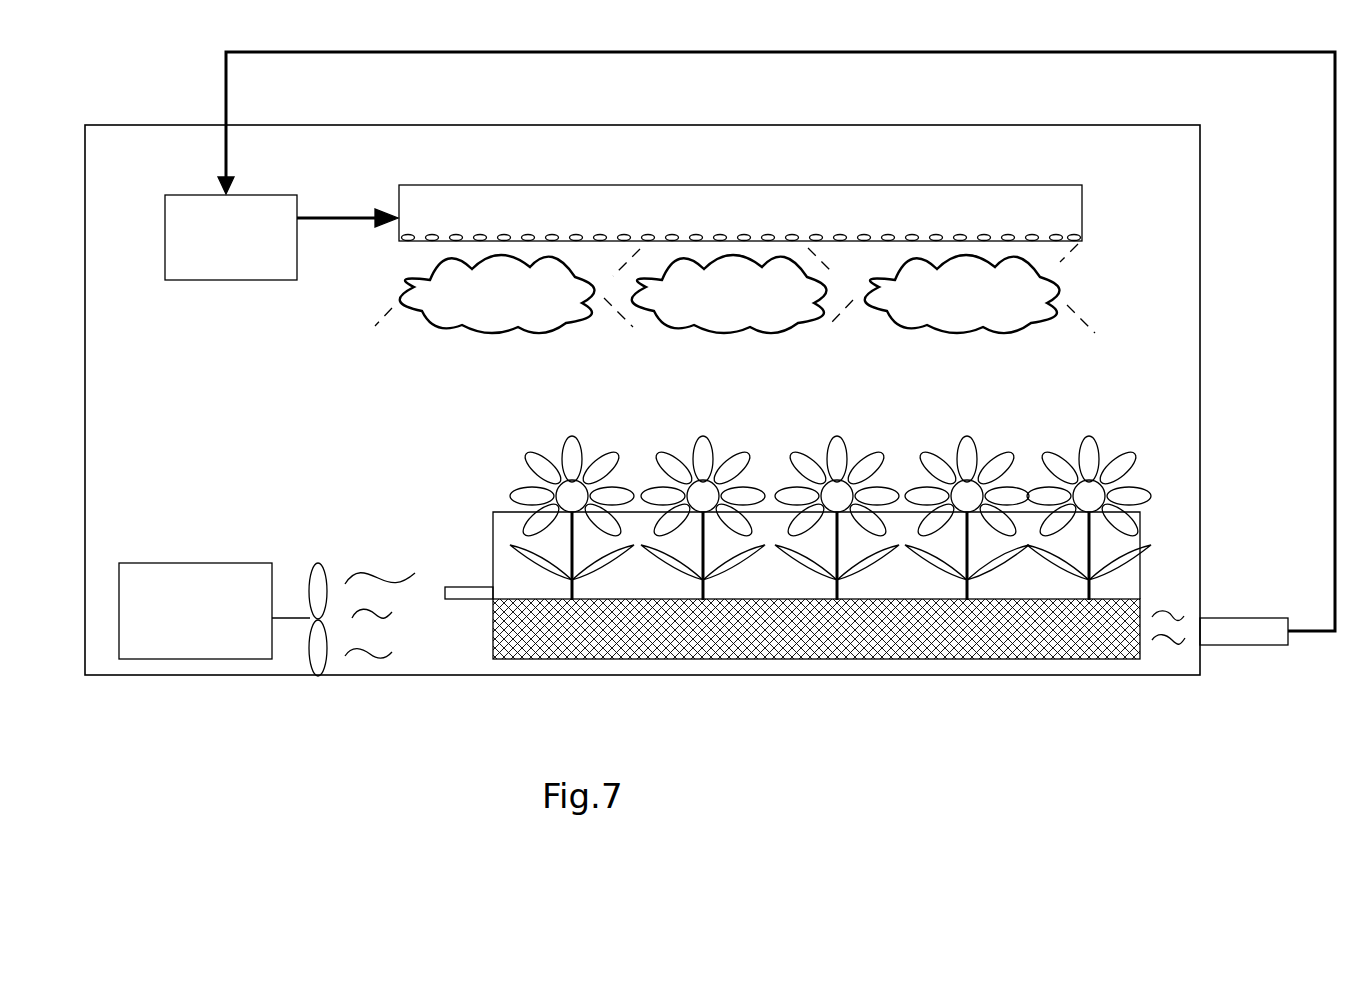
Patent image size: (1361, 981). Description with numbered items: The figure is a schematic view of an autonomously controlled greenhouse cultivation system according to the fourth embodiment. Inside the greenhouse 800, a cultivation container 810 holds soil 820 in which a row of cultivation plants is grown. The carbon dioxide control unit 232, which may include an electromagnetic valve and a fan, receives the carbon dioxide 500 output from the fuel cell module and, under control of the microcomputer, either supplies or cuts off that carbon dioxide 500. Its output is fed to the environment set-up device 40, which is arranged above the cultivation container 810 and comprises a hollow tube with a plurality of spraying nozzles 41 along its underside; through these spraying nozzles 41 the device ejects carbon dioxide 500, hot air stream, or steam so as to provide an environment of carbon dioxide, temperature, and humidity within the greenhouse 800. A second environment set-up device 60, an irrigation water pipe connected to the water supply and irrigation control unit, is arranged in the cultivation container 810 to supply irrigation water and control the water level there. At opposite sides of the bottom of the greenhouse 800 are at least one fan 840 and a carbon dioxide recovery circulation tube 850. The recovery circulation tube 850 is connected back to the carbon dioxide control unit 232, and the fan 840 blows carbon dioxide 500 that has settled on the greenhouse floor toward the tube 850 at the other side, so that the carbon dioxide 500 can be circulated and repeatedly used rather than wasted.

The environment set-up device 40 is at (1082, 208).
The spraying nozzles 41 is at (1055, 240).
The environment set-up device 60 is at (457, 602).
The carbon dioxide control unit 232 is at (207, 281).
The carbon dioxide 500 is at (321, 221).
The greenhouse 800 is at (840, 675).
The cultivation container 810 is at (493, 525).
The soil 820 is at (507, 630).
The fan 840 is at (180, 659).
The carbon dioxide recovery circulation tube 850 is at (1253, 645).